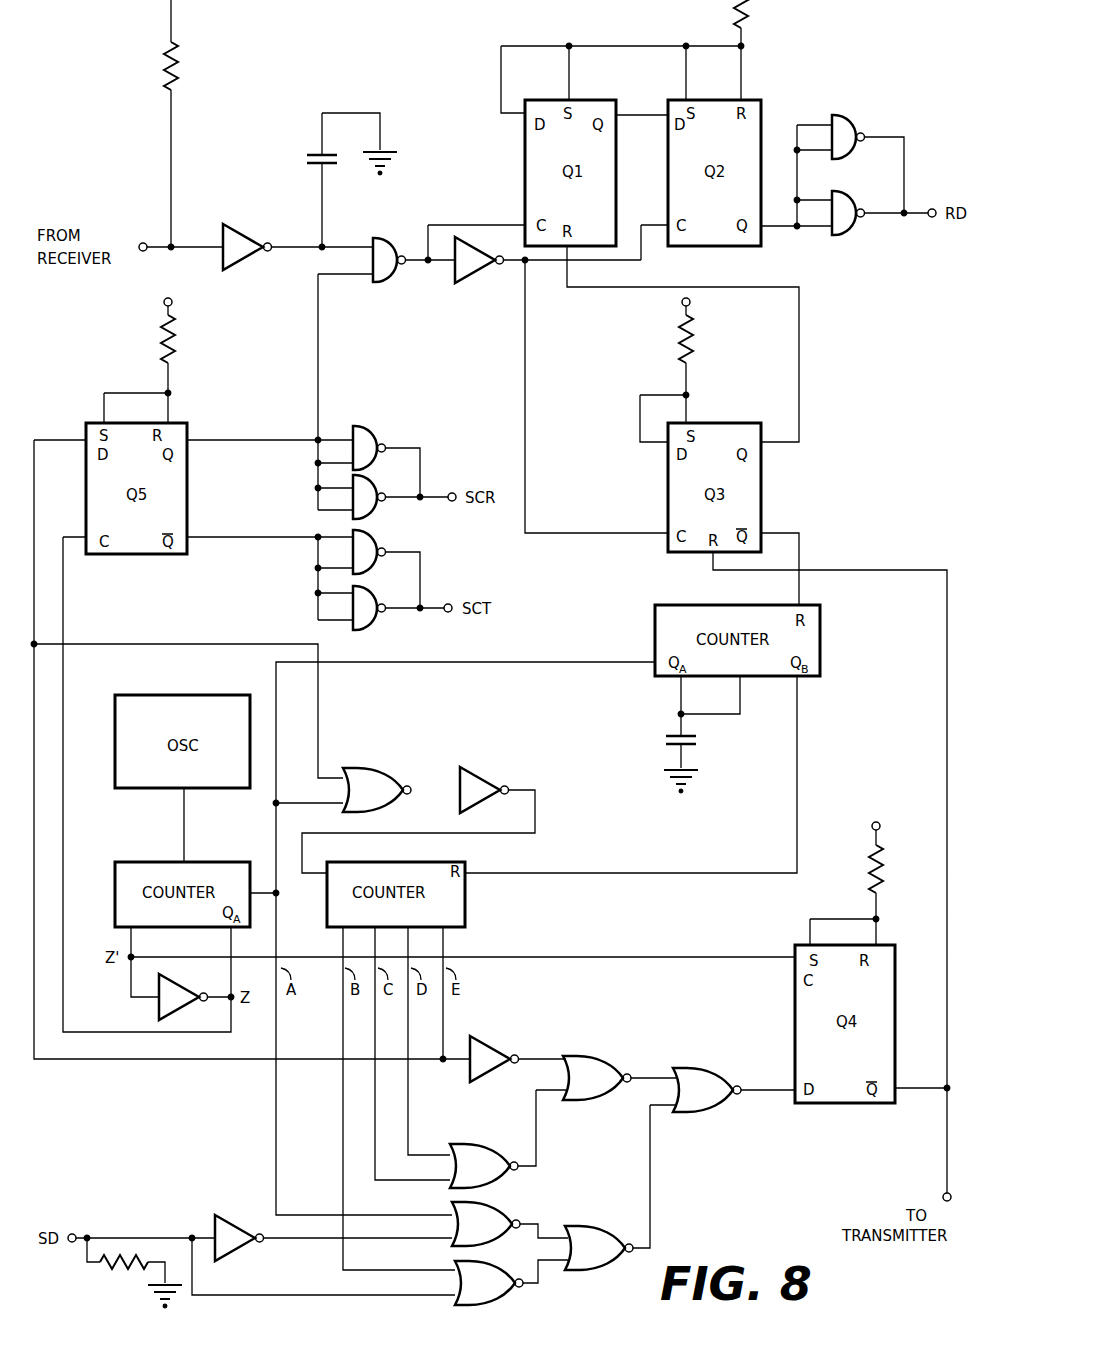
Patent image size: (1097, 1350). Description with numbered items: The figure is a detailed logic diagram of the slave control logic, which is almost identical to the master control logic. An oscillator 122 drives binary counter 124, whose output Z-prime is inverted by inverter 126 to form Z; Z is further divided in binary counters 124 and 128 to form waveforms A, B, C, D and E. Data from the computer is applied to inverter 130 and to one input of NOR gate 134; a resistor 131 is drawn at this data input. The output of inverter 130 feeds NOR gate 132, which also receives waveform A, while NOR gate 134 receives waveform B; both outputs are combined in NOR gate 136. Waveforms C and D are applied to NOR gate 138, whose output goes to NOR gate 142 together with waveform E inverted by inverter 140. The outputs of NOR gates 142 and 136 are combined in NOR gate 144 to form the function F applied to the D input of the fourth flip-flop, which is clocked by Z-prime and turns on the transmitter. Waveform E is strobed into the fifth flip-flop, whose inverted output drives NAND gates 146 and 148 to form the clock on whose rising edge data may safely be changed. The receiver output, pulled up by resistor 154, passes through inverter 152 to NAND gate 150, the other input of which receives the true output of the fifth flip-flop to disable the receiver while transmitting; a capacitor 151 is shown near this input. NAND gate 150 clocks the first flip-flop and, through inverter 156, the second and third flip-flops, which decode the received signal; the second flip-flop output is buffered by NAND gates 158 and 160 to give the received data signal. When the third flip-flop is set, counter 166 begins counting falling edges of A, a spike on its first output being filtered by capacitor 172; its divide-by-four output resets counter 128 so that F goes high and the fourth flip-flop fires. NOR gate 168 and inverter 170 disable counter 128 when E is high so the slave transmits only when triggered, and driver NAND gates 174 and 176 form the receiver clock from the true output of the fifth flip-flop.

The oscillator 122 is at (212, 695).
The binary counter 124 is at (212, 862).
The inverter 126 is at (172, 982).
The binary counter 128 is at (452, 862).
The inverter 130 is at (240, 1221).
The resistor 131 is at (102, 1270).
The NOR gate 132 is at (485, 1203).
The NOR gate 134 is at (508, 1290).
The NOR gate 136 is at (590, 1227).
The NOR gate 138 is at (480, 1145).
The inverter 140 is at (480, 1045).
The NOR gate 142 is at (595, 1056).
The NOR gate 144 is at (703, 1068).
The driver NAND gate 146 is at (372, 532).
The driver NAND gate 148 is at (372, 587).
The NAND gate 150 is at (391, 281).
The capacitor 151 is at (310, 156).
The inverter 152 is at (243, 228).
The pull-up resistor 154 is at (178, 72).
The inverter 156 is at (477, 272).
The NAND gate 158 is at (850, 112).
The NAND gate 160 is at (852, 236).
The counter 166 is at (822, 614).
The NOR gate 168 is at (373, 768).
The inverter 170 is at (470, 767).
The capacitor 172 is at (678, 731).
The driver NAND gate 174 is at (370, 425).
The driver NAND gate 176 is at (372, 478).